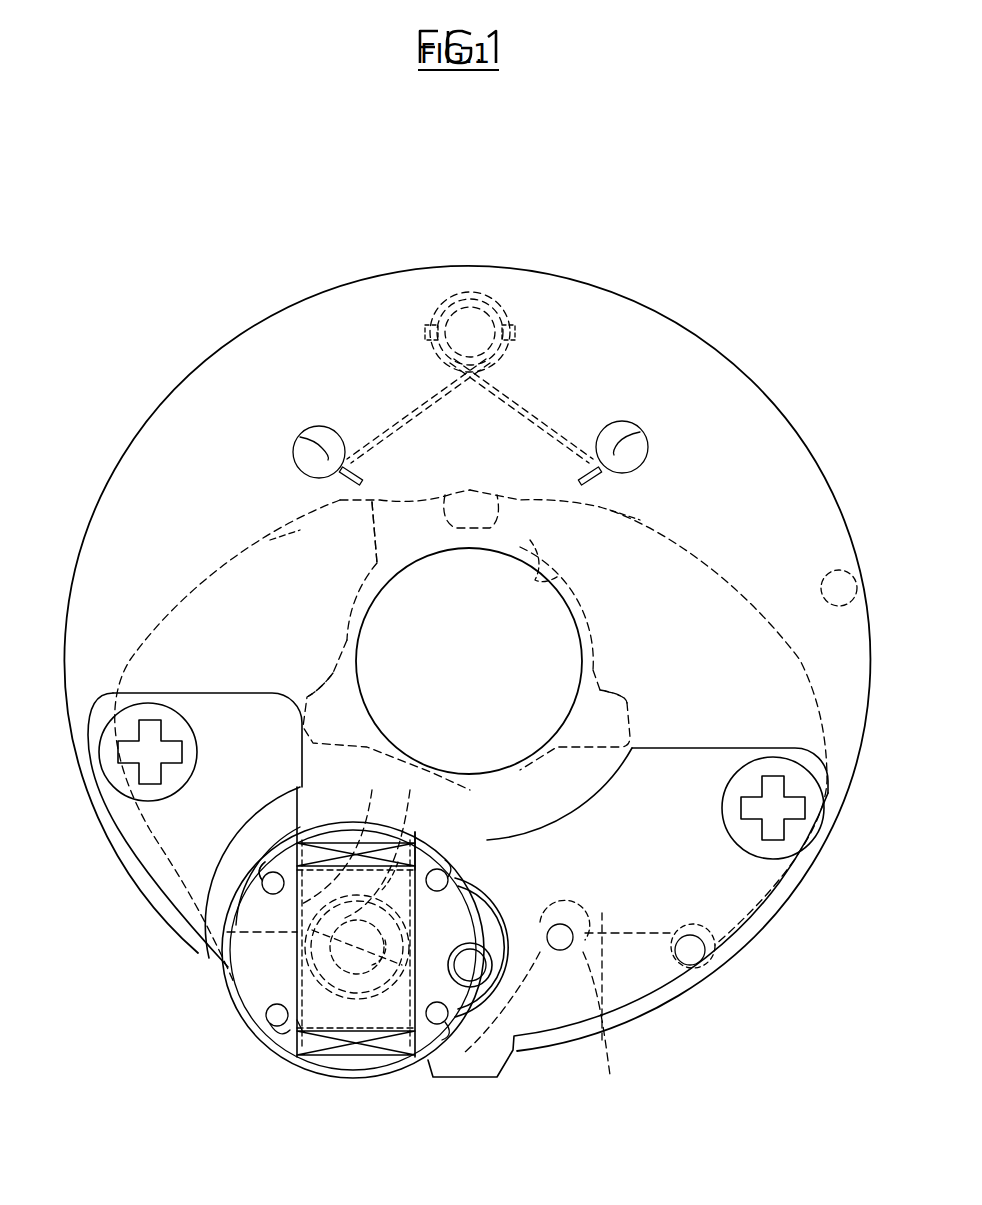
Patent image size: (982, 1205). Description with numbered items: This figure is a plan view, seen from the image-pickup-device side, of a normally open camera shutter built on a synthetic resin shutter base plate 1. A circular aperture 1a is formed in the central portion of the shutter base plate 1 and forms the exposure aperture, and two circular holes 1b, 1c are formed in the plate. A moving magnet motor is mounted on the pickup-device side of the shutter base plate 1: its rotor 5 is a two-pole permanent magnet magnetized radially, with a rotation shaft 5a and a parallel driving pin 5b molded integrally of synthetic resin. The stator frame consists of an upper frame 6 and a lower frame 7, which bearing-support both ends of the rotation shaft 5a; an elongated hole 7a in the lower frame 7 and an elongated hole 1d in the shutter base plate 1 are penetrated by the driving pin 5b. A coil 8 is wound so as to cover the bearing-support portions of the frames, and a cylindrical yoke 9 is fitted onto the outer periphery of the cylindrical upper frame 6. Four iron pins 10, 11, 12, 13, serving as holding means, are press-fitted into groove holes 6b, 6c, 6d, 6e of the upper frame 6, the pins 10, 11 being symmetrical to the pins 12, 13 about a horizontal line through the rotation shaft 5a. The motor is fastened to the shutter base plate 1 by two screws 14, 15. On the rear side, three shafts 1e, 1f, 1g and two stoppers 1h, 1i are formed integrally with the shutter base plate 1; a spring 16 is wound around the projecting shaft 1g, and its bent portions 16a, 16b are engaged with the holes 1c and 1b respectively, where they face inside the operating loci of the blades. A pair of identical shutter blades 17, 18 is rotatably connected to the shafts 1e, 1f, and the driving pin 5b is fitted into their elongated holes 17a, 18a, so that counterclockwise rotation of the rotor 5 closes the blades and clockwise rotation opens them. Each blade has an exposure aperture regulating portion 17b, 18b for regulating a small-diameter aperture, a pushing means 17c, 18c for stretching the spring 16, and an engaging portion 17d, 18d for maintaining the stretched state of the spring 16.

The shutter base plate 1 is at (622, 304).
The circular aperture 1a is at (578, 628).
The circular hole 1b is at (318, 428).
The circular hole 1c is at (618, 432).
The elongated hole 1d is at (497, 888).
The shaft 1e is at (576, 952).
The shaft 1f is at (398, 862).
The shaft 1g is at (492, 306).
The stopper 1h is at (713, 973).
The stopper 1i is at (839, 570).
The rotor 5 is at (297, 960).
The rotation shaft 5a is at (365, 1010).
The driving pin 5b is at (585, 928).
The upper frame 6 is at (250, 967).
The groove hole 6b is at (265, 872).
The groove hole 6c is at (446, 870).
The groove hole 6d is at (270, 1023).
The groove hole 6e is at (445, 1025).
The lower frame 7 is at (167, 857).
The elongated hole 7a is at (548, 834).
The coil 8 is at (345, 842).
The cylindrical yoke 9 is at (312, 1067).
The iron pin 10 is at (275, 872).
The iron pin 11 is at (425, 845).
The iron pin 12 is at (293, 1025).
The iron pin 13 is at (458, 1015).
The screw 14 is at (117, 783).
The screw 15 is at (792, 826).
The spring 16 is at (455, 308).
The bent portion 16a is at (605, 470).
The bent portion 16b is at (340, 470).
The shutter blade 17 is at (212, 578).
The elongated hole 17a is at (520, 980).
The exposure aperture regulating portion 17b is at (365, 673).
The pushing means 17c is at (392, 560).
The engaging portion 17d is at (280, 530).
The shutter blade 18 is at (700, 556).
The elongated hole 18a is at (590, 888).
The exposure aperture regulating portion 18b is at (570, 695).
The pushing means 18c is at (545, 560).
The engaging portion 18d is at (626, 508).